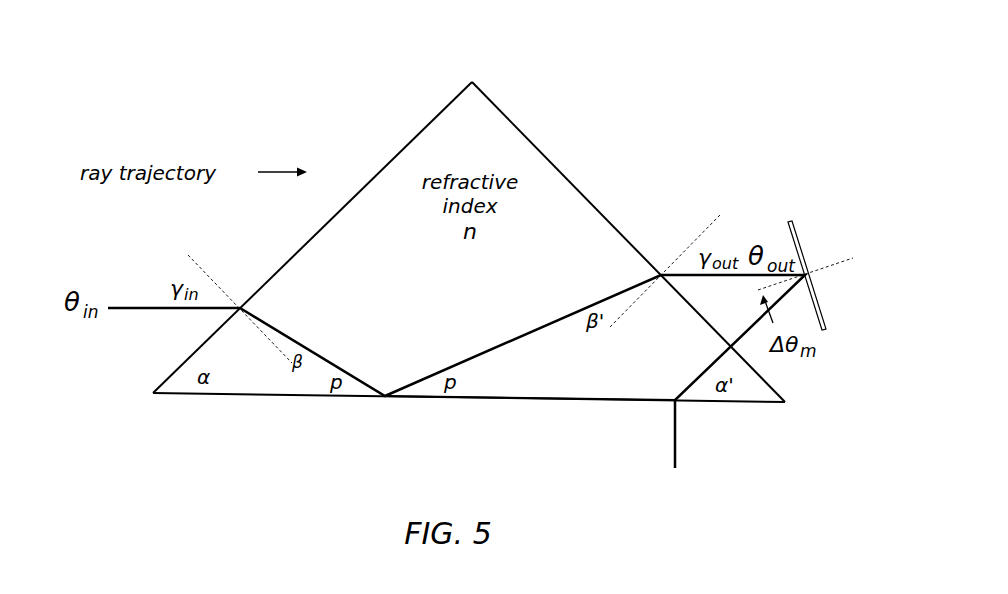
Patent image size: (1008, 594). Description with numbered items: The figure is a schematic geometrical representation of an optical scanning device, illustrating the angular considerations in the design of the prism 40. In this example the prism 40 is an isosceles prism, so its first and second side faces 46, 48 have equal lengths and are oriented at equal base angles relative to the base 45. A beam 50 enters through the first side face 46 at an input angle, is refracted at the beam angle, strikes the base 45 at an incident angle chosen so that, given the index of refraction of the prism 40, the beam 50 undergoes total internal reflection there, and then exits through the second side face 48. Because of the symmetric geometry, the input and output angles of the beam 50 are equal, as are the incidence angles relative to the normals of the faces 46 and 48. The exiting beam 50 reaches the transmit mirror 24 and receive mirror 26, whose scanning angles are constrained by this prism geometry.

The transmit mirror 24 is at (826, 216).
The receive mirror 26 is at (788, 222).
The prism 40 is at (227, 394).
The base 45 is at (368, 399).
The first side face 46 is at (391, 158).
The second side face 48 is at (550, 158).
The beam 50 is at (127, 310).